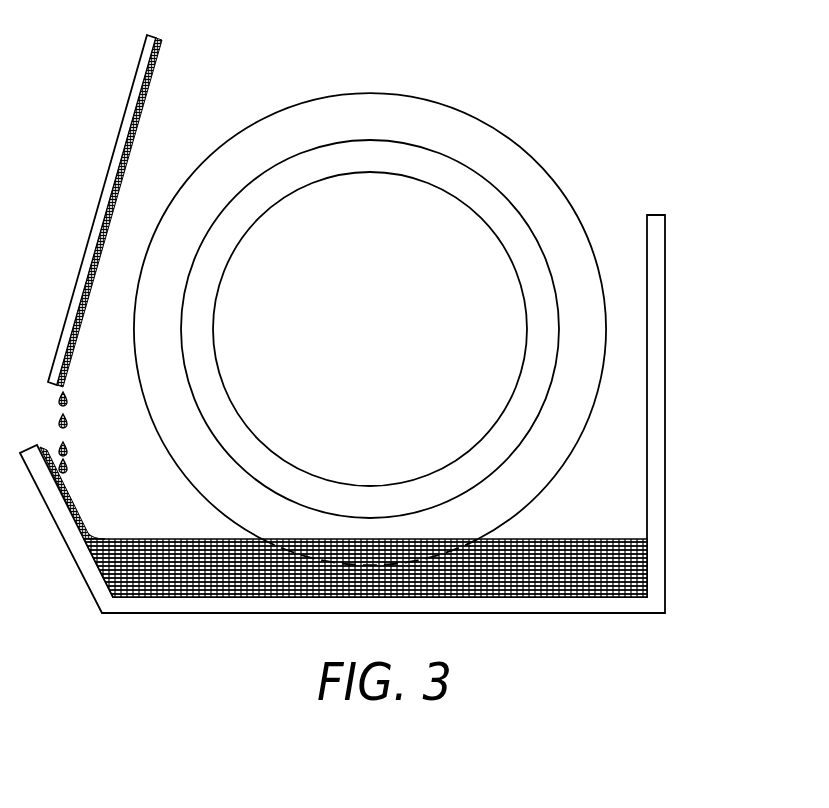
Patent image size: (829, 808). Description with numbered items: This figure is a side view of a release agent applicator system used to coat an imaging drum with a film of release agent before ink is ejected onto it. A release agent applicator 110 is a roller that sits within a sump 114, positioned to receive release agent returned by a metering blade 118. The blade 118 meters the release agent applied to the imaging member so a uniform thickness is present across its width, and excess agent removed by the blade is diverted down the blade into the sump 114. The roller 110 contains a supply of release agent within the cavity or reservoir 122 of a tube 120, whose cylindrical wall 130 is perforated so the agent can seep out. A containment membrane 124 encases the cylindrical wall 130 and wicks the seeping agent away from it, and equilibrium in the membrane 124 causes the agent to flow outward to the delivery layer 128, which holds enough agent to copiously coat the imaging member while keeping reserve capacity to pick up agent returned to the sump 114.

The release agent applicator 110 is at (573, 160).
The sump 114 is at (665, 582).
The metering blade 118 is at (112, 152).
The tube 120 is at (492, 216).
The release agent reservoir 122 is at (385, 342).
The containment membrane 124 is at (332, 150).
The delivery layer 128 is at (435, 108).
The cylindrical wall 130 is at (542, 345).